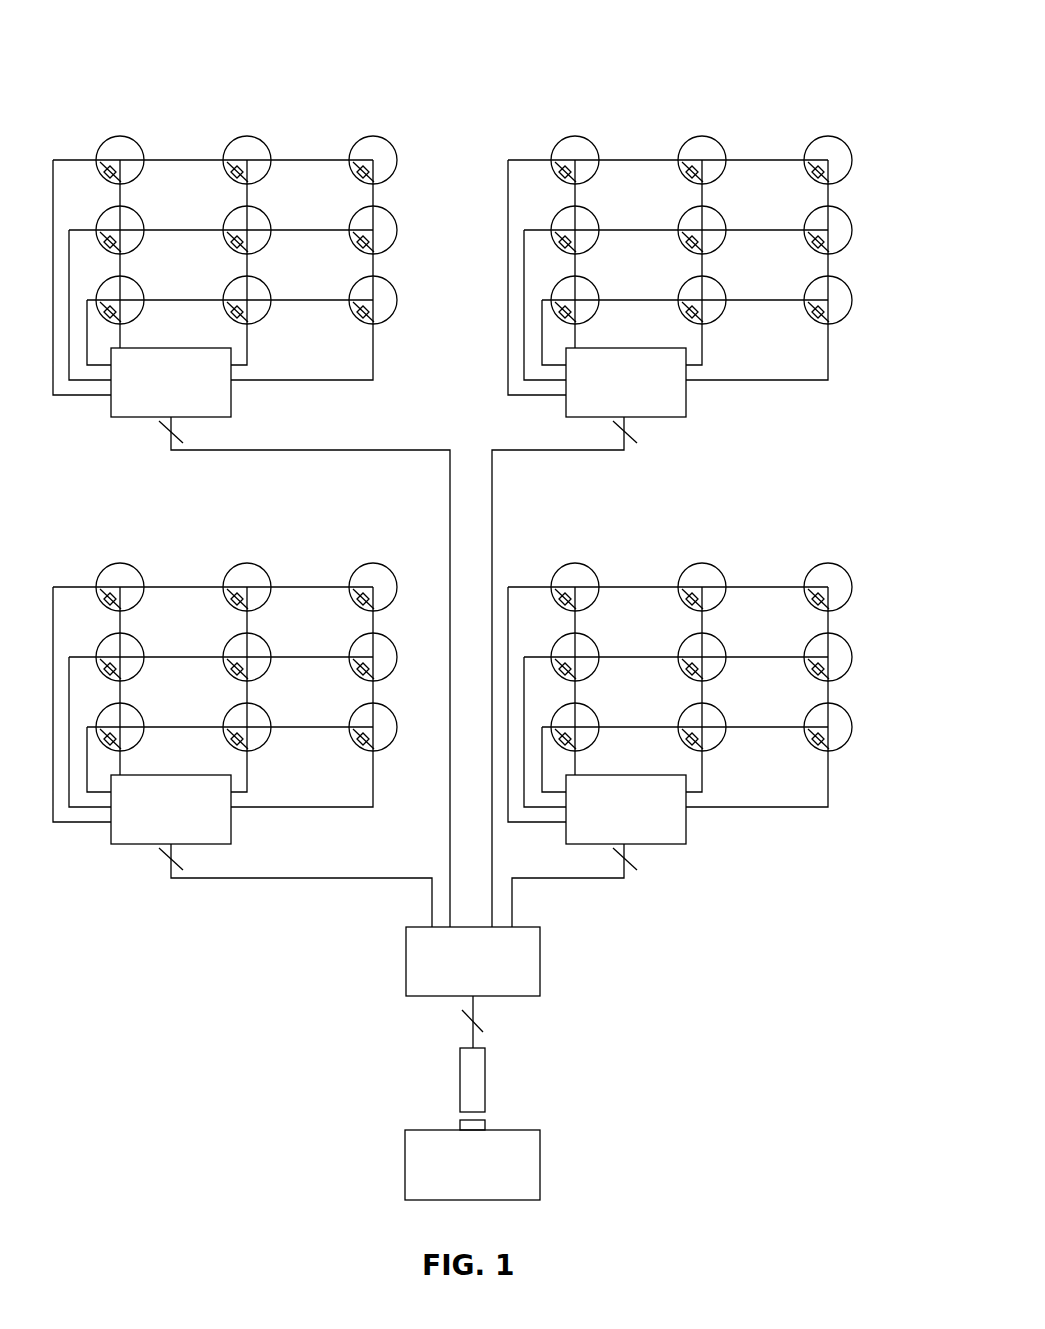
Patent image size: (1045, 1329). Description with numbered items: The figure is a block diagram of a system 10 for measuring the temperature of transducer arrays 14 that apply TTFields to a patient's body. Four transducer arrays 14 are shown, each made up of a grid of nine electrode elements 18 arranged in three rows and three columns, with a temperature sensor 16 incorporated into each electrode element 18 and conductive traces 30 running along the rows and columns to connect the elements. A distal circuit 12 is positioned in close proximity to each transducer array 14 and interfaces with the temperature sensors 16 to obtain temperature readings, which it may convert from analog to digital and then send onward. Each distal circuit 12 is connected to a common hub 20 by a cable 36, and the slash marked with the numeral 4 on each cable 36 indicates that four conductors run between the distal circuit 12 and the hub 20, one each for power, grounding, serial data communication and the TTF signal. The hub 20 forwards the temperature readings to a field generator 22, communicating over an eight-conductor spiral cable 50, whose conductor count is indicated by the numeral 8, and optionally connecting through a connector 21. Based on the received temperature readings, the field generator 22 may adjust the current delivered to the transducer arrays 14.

The system 10 is at (726, 39).
The distal circuit 12 is at (232, 392).
The transducer array 14 is at (307, 138).
The temperature sensor 16 is at (356, 176).
The electrode element 18 is at (123, 137).
The conductive traces 30 is at (191, 147).
The cable 36 is at (313, 452).
The number of cable conductors 4 is at (160, 439).
The hub 20 is at (406, 960).
The hub cable conductors 8 is at (491, 1022).
The 8-conductor spiral cable 50 is at (476, 1007).
The connector 21 is at (460, 1080).
The field generator 22 is at (405, 1163).